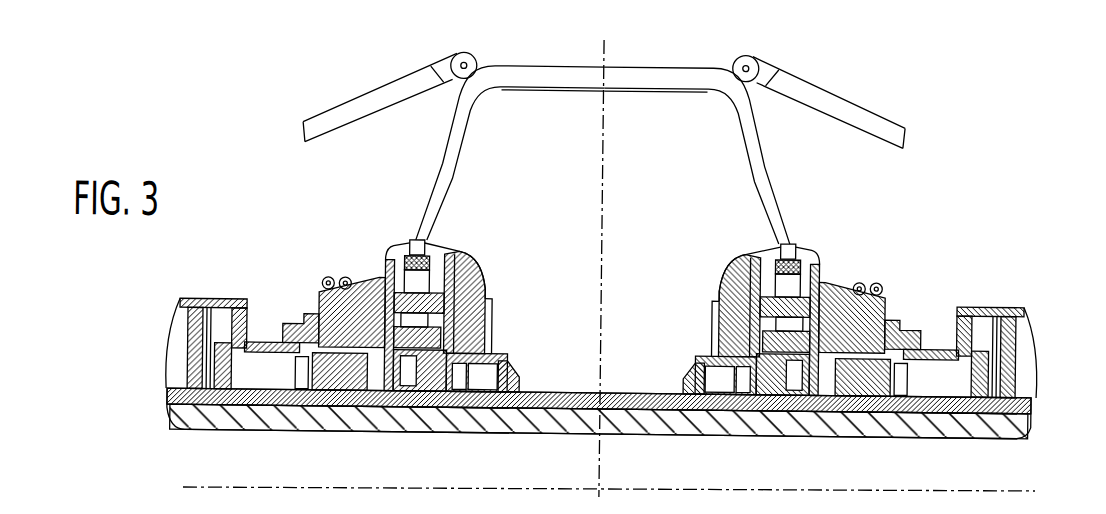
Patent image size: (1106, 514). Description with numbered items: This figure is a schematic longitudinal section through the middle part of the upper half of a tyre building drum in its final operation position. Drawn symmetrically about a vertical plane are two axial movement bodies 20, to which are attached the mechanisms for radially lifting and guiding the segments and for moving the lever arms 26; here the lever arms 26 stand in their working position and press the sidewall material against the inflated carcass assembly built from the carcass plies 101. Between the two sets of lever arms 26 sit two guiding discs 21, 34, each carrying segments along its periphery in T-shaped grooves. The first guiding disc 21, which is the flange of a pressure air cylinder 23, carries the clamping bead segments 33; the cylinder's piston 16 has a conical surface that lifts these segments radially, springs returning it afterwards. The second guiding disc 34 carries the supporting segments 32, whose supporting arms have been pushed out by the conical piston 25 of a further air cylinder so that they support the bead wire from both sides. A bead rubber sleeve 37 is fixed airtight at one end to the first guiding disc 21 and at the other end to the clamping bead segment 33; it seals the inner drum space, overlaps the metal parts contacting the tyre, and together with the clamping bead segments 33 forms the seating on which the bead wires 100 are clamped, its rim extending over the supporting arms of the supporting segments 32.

The piston 16 is at (778, 378).
The axial movement body 20 is at (1010, 398).
The first guiding disc 21 is at (475, 263).
The pressure air cylinder 23 is at (697, 359).
The piston 25 is at (852, 309).
The lever arms 26 is at (817, 90).
The supporting segments 32 is at (351, 306).
The clamping bead segments 33 is at (458, 264).
The second guiding disc 34 is at (386, 247).
The bead rubber sleeve 37 is at (726, 261).
The bead wires 100 is at (778, 238).
The carcass plies 101 is at (634, 90).